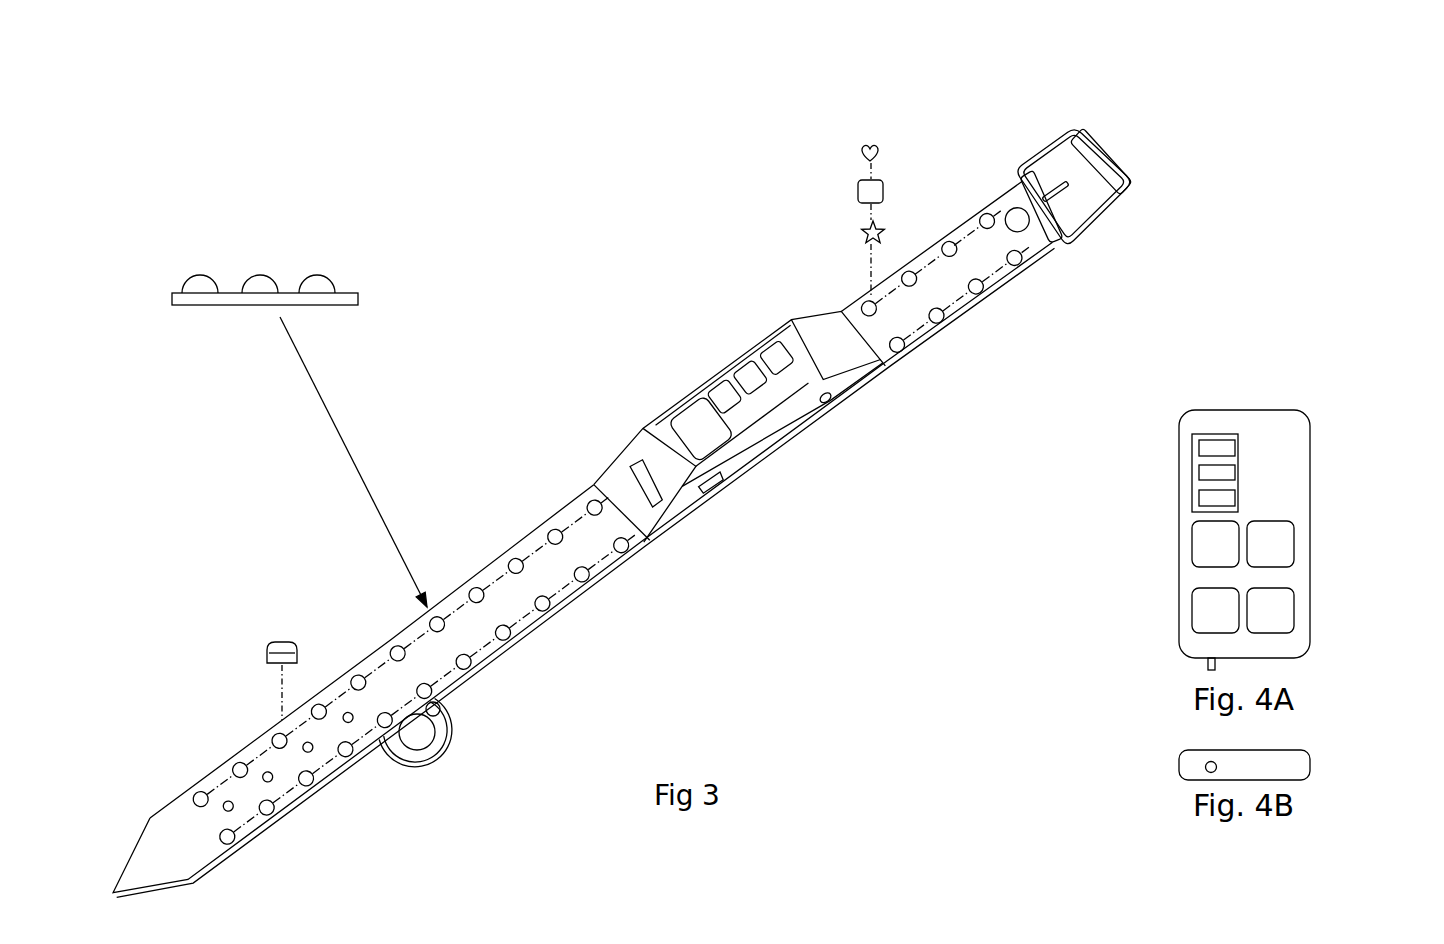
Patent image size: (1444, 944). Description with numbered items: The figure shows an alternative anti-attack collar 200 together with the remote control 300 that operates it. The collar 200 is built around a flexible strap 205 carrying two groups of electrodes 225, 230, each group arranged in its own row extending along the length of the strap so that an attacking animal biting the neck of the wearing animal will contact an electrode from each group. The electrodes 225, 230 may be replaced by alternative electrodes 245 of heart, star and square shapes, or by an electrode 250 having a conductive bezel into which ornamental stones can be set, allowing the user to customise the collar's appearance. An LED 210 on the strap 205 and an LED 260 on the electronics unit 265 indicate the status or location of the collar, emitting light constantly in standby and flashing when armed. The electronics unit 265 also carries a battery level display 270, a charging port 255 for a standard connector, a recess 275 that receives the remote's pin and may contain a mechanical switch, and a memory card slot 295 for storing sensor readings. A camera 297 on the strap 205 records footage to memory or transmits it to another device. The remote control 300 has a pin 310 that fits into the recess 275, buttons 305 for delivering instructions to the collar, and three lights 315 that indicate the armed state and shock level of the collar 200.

In FIG. 3, the collar 200 is at (609, 510).
In FIG. 3, the flexible strap 205 is at (222, 305).
In FIG. 3, the LED 210 is at (446, 702).
In FIG. 3, the group of electrodes 225 is at (992, 296).
In FIG. 3, the group of electrodes 230 is at (263, 275).
In FIG. 3, the alternative electrodes 245 is at (863, 232).
In FIG. 3, the electrode with conductive bezel 250 is at (282, 640).
In FIG. 3, the charging port 255 is at (710, 493).
In FIG. 3, the LED 260 is at (692, 420).
In FIG. 3, the electronics unit 265 is at (818, 333).
In FIG. 3, the battery level display 270 is at (760, 400).
In FIG. 3, the recess 275 is at (833, 402).
In FIG. 3, the memory card slot 295 is at (633, 467).
In FIG. 3, the camera 297 is at (420, 735).
In FIG. 4A, the remote control 300 is at (1283, 431).
In FIG. 4B, the remote control 300 is at (1308, 764).
In FIG. 4A, the buttons 305 is at (1283, 606).
In FIG. 4A, the pin 310 is at (1206, 667).
In FIG. 4B, the pin 310 is at (1211, 766).
In FIG. 4A, the lights 315 is at (1211, 496).